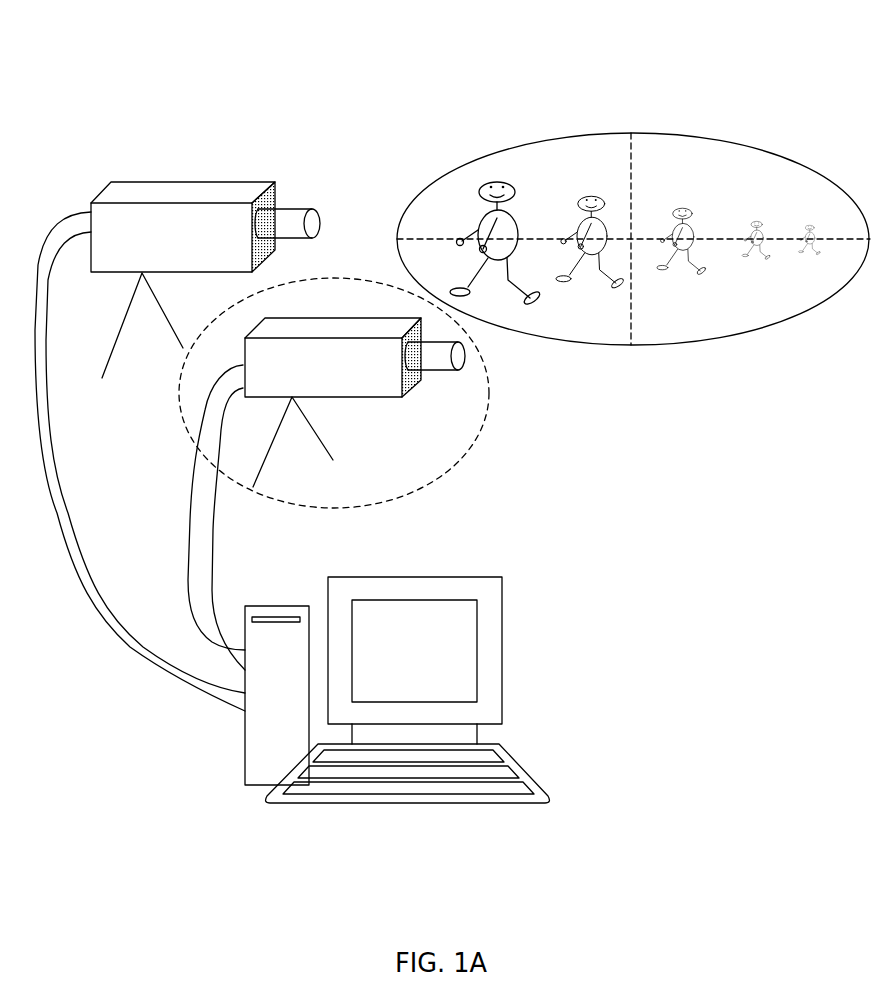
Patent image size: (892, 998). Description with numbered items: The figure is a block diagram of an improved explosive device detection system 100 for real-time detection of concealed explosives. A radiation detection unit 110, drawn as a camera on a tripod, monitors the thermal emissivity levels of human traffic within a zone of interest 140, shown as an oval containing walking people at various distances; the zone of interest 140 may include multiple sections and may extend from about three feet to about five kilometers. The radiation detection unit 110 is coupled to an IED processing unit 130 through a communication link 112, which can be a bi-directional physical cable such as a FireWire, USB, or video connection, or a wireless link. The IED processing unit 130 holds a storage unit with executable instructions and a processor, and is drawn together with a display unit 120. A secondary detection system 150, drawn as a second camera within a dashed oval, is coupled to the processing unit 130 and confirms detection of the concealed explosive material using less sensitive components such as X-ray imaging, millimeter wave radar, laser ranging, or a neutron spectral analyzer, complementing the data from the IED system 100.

The improved explosive device detection system 100 is at (512, 70).
The radiation detection unit 110 is at (152, 197).
The communication link 112 is at (70, 498).
The display unit 120 is at (502, 624).
The IED processing unit 130 is at (273, 606).
The zone of interest 140 is at (757, 330).
The secondary detection system 150 is at (452, 468).